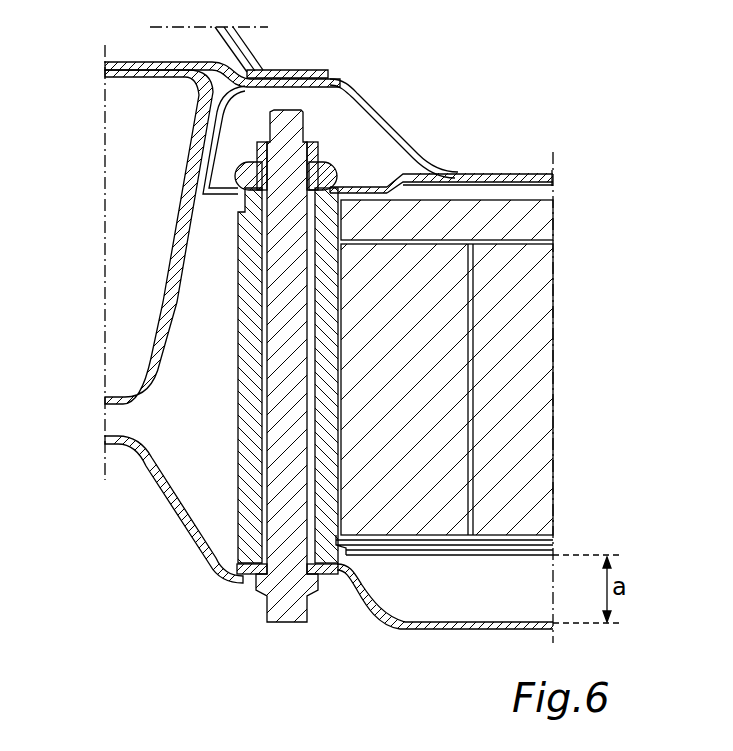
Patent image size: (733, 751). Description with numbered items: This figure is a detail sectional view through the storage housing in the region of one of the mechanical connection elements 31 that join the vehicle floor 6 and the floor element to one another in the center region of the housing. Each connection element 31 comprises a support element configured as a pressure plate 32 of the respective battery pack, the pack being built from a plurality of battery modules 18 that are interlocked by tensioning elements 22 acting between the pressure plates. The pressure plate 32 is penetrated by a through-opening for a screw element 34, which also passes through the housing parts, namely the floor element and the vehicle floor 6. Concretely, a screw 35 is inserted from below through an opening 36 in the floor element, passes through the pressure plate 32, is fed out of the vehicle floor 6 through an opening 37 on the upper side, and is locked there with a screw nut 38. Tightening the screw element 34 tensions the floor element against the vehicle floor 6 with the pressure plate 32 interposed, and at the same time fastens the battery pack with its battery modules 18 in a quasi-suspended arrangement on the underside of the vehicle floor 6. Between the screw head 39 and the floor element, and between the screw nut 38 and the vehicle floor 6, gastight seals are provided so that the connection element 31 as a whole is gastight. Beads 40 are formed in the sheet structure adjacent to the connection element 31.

The vehicle floor 6 is at (443, 176).
The battery module 18 is at (612, 274).
The tensioning elements 22 is at (533, 222).
The connection elements 31 is at (195, 433).
The pressure plate 32 is at (250, 458).
The screw element 34 is at (290, 503).
The screw 35 is at (262, 564).
The opening 36 is at (308, 588).
The opening 37 is at (335, 188).
The screw nut 38 is at (327, 167).
The screw head 39 is at (290, 598).
The beads 40 is at (363, 607).